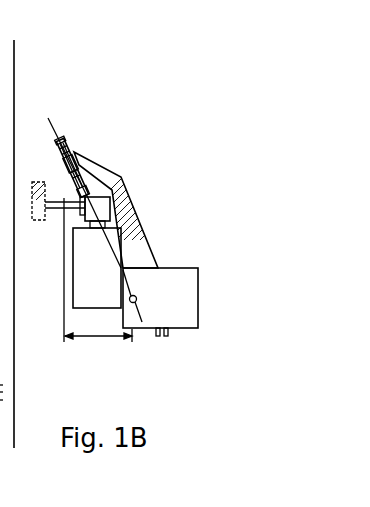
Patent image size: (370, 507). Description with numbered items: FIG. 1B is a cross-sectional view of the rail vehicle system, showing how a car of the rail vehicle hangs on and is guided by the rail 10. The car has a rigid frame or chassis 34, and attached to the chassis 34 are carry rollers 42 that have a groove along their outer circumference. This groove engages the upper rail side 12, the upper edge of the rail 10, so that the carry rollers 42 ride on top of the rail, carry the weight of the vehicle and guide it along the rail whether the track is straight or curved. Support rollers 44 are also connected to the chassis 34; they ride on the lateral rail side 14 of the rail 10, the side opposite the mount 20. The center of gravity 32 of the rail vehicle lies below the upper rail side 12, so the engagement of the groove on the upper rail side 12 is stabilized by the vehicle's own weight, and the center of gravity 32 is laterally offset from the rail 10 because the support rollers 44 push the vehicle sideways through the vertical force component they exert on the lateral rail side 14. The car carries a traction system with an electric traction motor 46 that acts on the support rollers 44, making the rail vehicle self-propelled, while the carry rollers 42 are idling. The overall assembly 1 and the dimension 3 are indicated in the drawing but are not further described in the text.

The actuating device 1 is at (143, 75).
The distance 3 is at (98, 338).
The rail 10 is at (80, 196).
The upper rail side 12 is at (63, 175).
The lateral rail side 14 is at (64, 240).
The mount 20 is at (58, 203).
The center of gravity 32 is at (136, 304).
The chassis 34 is at (119, 188).
The carry rollers 42 is at (66, 148).
The support rollers 44 is at (101, 197).
The electric traction motor 46 is at (64, 338).